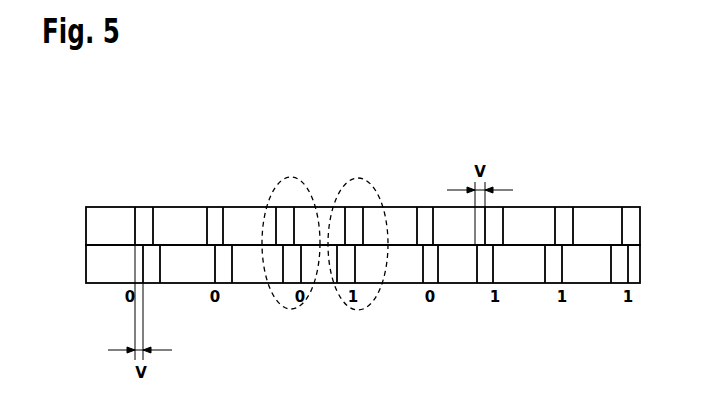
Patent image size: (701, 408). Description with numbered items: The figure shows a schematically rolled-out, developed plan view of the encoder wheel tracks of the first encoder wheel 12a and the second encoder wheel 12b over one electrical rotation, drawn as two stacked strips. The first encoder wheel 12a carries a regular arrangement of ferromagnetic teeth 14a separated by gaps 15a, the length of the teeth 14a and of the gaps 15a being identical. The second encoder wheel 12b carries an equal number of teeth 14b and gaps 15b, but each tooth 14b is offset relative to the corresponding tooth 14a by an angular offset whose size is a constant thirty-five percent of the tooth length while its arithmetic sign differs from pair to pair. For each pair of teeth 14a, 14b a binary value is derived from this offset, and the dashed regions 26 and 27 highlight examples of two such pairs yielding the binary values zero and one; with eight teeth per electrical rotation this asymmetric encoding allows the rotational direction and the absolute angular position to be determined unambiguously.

The first encoder wheel 12a is at (97, 234).
The second encoder wheel 12b is at (97, 271).
The teeth of the first encoder wheel 14a is at (152, 216).
The gaps of the first encoder wheel 15a is at (197, 216).
The teeth of the second encoder wheel 14b is at (157, 285).
The gaps of the second encoder wheel 15b is at (213, 285).
The first detection region (bit 0) 26 is at (292, 176).
The second detection region (bit 1) 27 is at (357, 176).